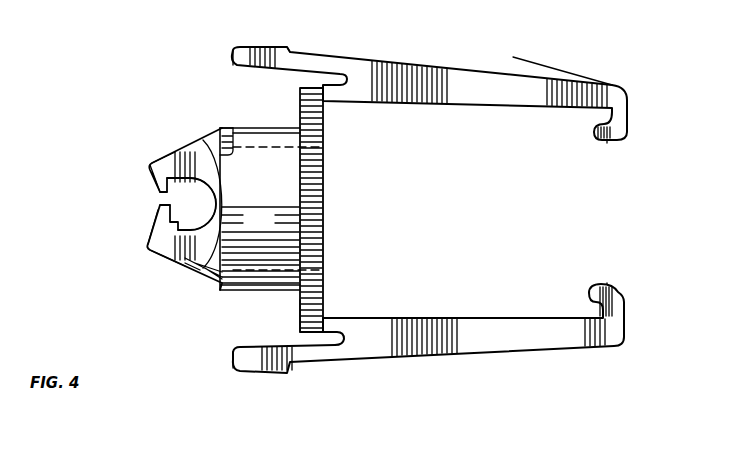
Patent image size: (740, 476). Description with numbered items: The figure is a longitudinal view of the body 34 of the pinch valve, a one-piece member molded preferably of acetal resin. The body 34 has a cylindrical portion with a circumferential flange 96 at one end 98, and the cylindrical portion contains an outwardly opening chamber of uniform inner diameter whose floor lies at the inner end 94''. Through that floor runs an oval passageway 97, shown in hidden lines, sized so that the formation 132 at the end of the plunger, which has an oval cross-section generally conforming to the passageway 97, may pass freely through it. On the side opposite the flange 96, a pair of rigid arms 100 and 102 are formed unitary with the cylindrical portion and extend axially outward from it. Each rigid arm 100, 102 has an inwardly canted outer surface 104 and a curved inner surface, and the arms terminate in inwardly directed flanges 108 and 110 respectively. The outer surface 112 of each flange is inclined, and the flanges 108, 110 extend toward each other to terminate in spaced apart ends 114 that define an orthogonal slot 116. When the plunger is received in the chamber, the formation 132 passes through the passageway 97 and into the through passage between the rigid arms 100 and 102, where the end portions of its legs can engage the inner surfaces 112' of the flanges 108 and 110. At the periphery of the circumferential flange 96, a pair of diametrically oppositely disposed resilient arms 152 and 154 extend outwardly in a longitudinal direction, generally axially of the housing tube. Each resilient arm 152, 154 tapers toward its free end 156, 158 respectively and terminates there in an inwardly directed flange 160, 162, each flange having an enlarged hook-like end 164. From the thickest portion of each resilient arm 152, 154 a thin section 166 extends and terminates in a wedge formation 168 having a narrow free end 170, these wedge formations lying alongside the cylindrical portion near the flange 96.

The body 34 is at (517, 54).
The inner end 94'' is at (195, 95).
The circumferential flange 96 is at (302, 307).
The passageway 97 is at (277, 150).
The end 98 is at (290, 117).
The rigid arm 100 is at (182, 145).
The rigid arm 102 is at (185, 263).
The inwardly canted outer surface 104 is at (160, 152).
The inwardly directed flange 108 is at (157, 182).
The inwardly directed flange 110 is at (152, 233).
The outer surface 112 is at (112, 159).
The inner surface 112' is at (141, 264).
The spaced apart ends 114 is at (160, 213).
The orthogonal slot 116 is at (168, 198).
The formation 132 is at (260, 209).
The resilient arm 152 is at (392, 62).
The resilient arm 154 is at (430, 358).
The free end 156 is at (625, 75).
The free end 158 is at (622, 342).
The inwardly directed flange 160 is at (628, 115).
The inwardly directed flange 162 is at (626, 308).
The hook-like end 164 is at (607, 282).
The thin section 166 is at (333, 62).
The wedge formation 168 is at (293, 45).
The narrow free end 170 is at (233, 50).